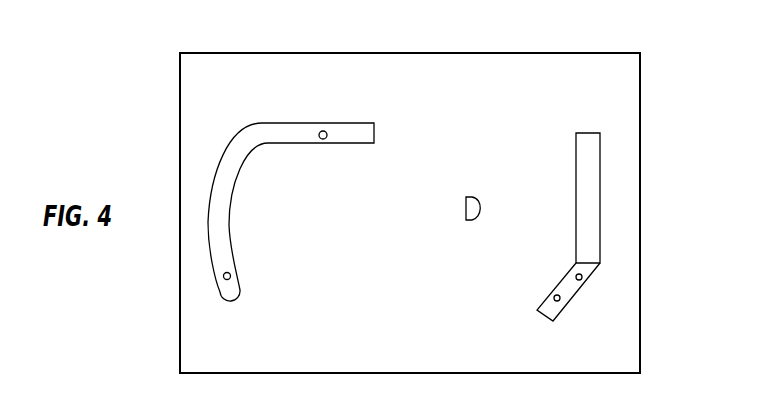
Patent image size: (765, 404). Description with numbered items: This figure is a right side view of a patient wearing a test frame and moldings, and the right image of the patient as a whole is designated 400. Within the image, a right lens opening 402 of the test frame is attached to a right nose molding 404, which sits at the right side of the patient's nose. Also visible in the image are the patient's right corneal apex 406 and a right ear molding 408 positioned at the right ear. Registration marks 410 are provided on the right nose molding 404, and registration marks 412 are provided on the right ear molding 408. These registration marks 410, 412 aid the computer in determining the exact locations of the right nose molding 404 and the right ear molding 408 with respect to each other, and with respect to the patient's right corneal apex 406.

The right image of a patient 400 is at (588, 40).
The right lens opening 402 is at (597, 245).
The right nose molding 404 is at (573, 297).
The right corneal apex 406 is at (473, 196).
The right ear molding 408 is at (254, 146).
The registration marks 410 is at (575, 274).
The registration marks 412 is at (323, 139).